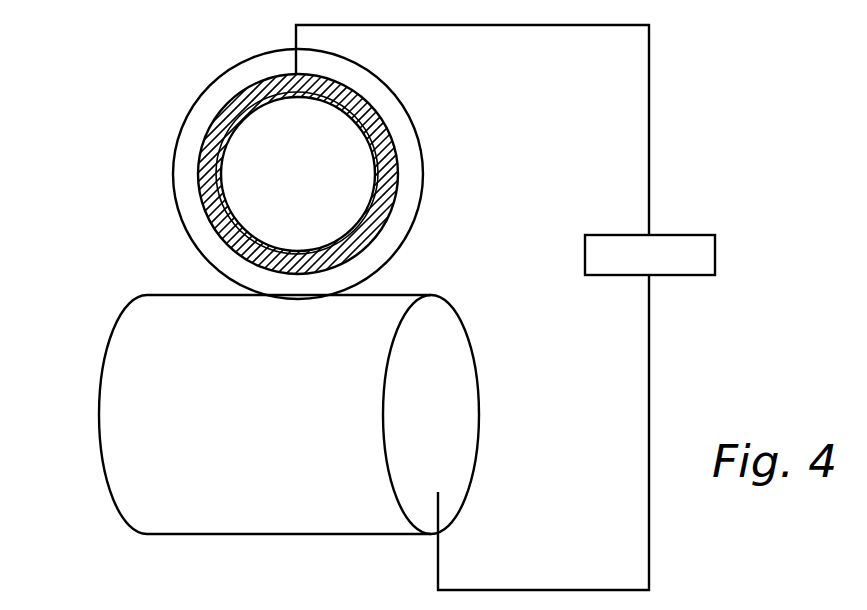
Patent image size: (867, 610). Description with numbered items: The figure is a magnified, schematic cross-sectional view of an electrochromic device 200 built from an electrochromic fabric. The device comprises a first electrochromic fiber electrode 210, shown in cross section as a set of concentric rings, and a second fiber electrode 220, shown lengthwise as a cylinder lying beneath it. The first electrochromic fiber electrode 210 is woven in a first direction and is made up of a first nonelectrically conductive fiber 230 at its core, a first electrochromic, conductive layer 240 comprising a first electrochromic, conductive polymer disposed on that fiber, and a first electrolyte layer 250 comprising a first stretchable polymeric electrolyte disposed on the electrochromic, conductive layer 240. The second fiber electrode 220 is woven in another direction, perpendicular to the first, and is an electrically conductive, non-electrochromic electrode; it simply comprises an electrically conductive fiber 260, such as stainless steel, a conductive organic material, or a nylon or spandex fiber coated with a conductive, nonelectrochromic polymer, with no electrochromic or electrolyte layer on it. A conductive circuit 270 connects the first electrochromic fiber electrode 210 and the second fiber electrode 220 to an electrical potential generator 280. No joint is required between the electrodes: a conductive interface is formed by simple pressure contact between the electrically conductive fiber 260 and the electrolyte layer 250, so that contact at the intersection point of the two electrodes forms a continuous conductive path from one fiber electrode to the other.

The electrochromic device 200 is at (737, 88).
The first electrochromic fiber electrode 210 is at (84, 47).
The second fiber electrode 220 is at (84, 302).
The first nonelectrically conductive fiber 230 is at (328, 177).
The first electrochromic, conductive layer 240 is at (212, 150).
The first electrolyte layer 250 is at (260, 72).
The electrically conductive fiber 260 is at (440, 425).
The conductive circuit 270 is at (607, 25).
The electrical potential generator 280 is at (682, 234).